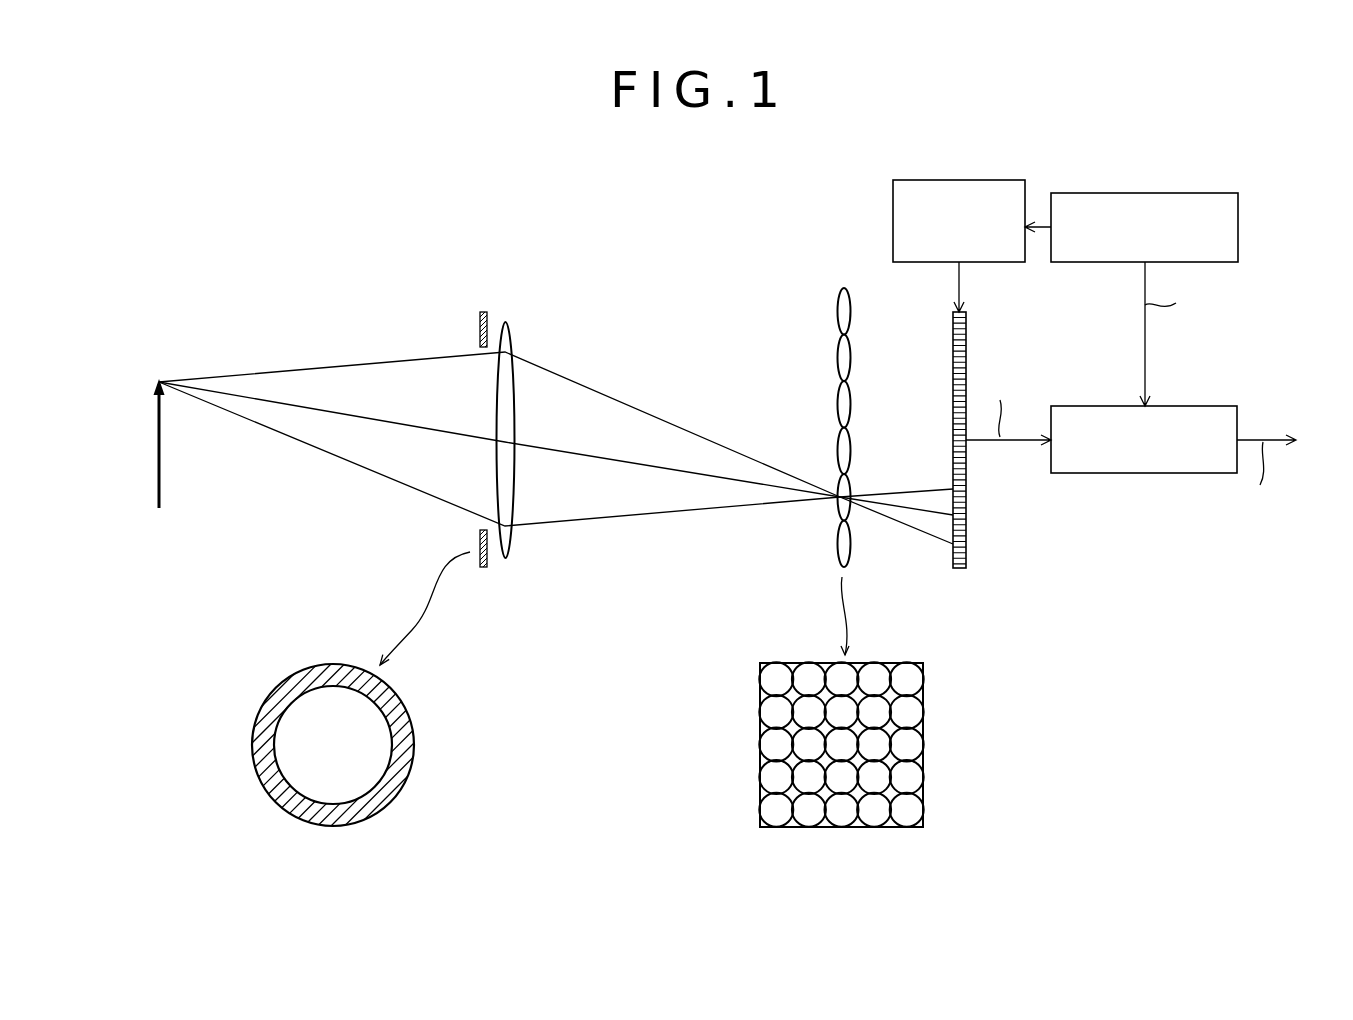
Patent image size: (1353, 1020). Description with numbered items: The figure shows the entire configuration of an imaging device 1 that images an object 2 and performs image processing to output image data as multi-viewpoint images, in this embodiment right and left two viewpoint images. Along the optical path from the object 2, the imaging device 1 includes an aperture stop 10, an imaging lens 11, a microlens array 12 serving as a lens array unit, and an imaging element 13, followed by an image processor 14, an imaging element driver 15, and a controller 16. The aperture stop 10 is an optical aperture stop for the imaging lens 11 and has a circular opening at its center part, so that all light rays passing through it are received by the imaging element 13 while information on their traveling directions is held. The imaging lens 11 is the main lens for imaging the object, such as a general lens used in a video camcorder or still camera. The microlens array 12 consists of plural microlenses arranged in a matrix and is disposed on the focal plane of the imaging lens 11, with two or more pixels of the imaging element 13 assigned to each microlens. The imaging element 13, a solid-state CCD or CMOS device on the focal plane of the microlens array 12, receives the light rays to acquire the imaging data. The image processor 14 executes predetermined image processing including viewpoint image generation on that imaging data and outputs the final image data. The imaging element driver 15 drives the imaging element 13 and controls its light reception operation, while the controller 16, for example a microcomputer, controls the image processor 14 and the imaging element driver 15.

The imaging device 1 is at (338, 292).
The object 2 is at (160, 493).
The aperture stop 10 is at (483, 568).
The imaging lens 11 is at (506, 322).
The microlens array 12 is at (827, 353).
The imaging element 13 is at (987, 511).
The image processor 14 is at (1212, 406).
The imaging element driver 15 is at (960, 180).
The controller 16 is at (1145, 193).